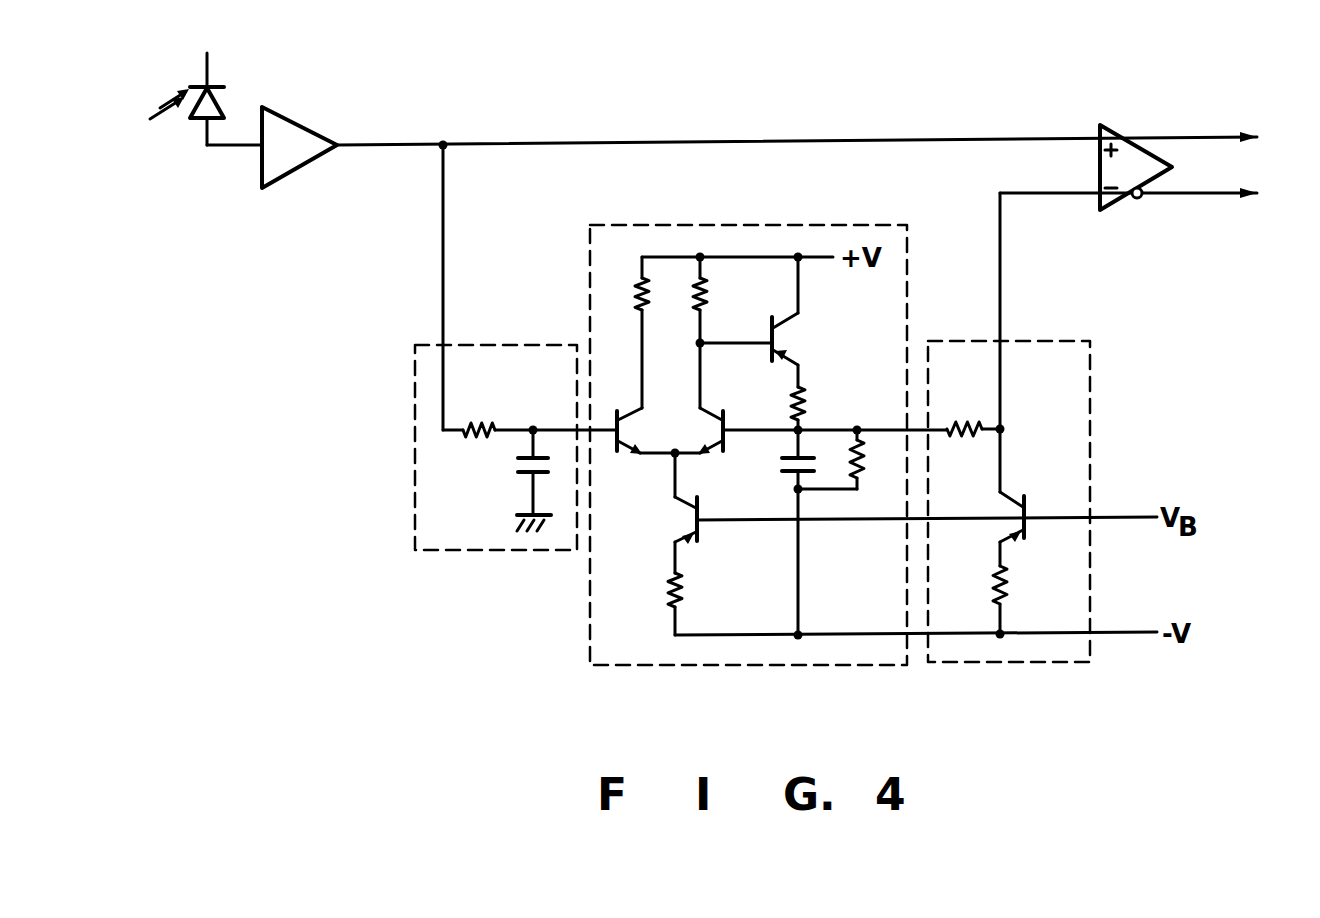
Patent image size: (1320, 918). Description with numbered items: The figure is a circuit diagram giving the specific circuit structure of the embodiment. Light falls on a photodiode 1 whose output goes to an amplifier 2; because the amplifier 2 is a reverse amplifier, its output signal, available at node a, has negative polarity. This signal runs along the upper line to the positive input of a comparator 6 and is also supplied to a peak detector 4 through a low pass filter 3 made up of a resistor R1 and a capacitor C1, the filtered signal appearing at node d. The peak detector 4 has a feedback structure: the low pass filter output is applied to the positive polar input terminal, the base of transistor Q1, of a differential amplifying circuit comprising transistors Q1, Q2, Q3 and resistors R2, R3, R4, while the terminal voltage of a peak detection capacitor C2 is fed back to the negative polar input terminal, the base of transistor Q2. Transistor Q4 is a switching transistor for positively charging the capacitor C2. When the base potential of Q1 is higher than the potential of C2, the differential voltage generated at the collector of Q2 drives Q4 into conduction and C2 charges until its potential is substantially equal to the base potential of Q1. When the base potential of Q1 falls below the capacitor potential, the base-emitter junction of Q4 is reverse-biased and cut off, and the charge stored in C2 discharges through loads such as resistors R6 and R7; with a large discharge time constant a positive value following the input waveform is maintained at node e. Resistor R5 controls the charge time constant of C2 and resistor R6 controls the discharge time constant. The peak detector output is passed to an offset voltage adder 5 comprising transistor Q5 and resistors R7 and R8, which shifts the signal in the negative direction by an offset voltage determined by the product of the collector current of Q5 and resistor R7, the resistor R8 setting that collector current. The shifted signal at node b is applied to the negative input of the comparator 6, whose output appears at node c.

The photodiode 1 is at (215, 89).
The amplifier 2 is at (294, 125).
The low pass filter 3 is at (413, 508).
The peak detector 4 is at (640, 668).
The offset voltage adder 5 is at (986, 664).
The comparator 6 is at (1122, 129).
The resistor R1 is at (477, 425).
The resistor R2 is at (634, 304).
The resistor R3 is at (728, 288).
The resistor R4 is at (686, 590).
The resistor R5 is at (806, 409).
The resistor R6 is at (866, 473).
The resistor R7 is at (962, 424).
The resistor R8 is at (1008, 585).
The capacitor C1 is at (518, 466).
The peak detection capacitor C2 is at (784, 471).
The transistor Q1 is at (628, 406).
The transistor Q2 is at (712, 406).
The transistor Q3 is at (674, 520).
The switching transistor Q4 is at (784, 343).
The transistor Q5 is at (1024, 502).
The signal node a is at (443, 143).
The signal node b is at (1003, 276).
The output node c is at (1176, 197).
The signal node d is at (540, 428).
The signal node e is at (864, 429).